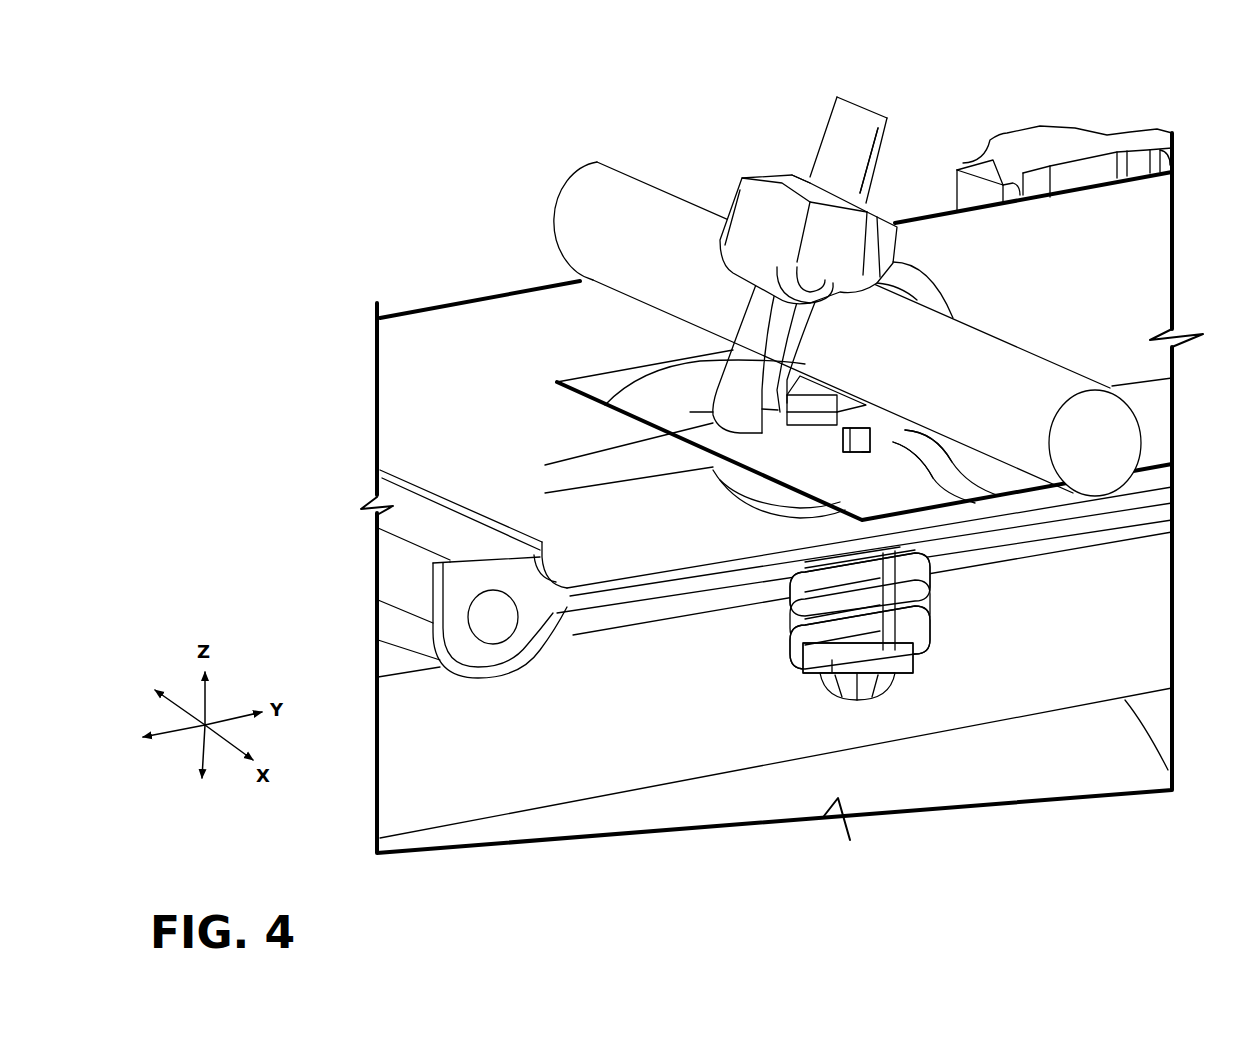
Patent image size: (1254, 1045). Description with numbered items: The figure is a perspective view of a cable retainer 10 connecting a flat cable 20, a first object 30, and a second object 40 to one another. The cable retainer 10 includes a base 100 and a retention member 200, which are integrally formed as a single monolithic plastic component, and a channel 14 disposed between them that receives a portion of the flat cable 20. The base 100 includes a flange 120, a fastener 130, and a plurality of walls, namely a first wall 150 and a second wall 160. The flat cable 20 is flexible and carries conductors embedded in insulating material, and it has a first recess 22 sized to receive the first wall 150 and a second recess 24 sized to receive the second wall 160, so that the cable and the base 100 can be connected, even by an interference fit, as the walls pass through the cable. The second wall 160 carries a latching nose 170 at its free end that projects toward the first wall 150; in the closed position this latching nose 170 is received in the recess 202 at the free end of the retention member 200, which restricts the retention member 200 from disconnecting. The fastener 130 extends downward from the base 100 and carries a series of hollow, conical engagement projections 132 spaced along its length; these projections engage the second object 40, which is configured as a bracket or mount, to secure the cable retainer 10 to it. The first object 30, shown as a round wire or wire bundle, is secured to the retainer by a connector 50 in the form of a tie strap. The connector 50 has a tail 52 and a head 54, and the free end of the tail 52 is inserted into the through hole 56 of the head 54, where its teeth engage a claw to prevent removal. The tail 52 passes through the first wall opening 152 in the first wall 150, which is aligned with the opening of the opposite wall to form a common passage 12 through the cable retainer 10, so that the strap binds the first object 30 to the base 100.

The cable retainer 10 is at (509, 529).
The base 100 is at (698, 484).
The common passage 12 is at (838, 442).
The first wall opening 152 is at (780, 626).
The channel 14 is at (910, 470).
The flat cable 20 is at (607, 385).
The first recess 22 is at (907, 430).
The second recess 24 is at (912, 480).
The first object 30 is at (593, 180).
The second object 40 is at (583, 600).
The connector 50 is at (770, 170).
The tail 52 is at (882, 140).
The head 54 is at (900, 230).
The through hole 56 is at (875, 203).
The flange 120 is at (713, 473).
The fastener 130 is at (920, 630).
The engagement projections 132 is at (931, 640).
The first wall 150 is at (1085, 510).
The second wall 160 is at (892, 446).
The latching nose 170 is at (798, 399).
The retention member 200 is at (788, 420).
The recess 202 is at (790, 412).